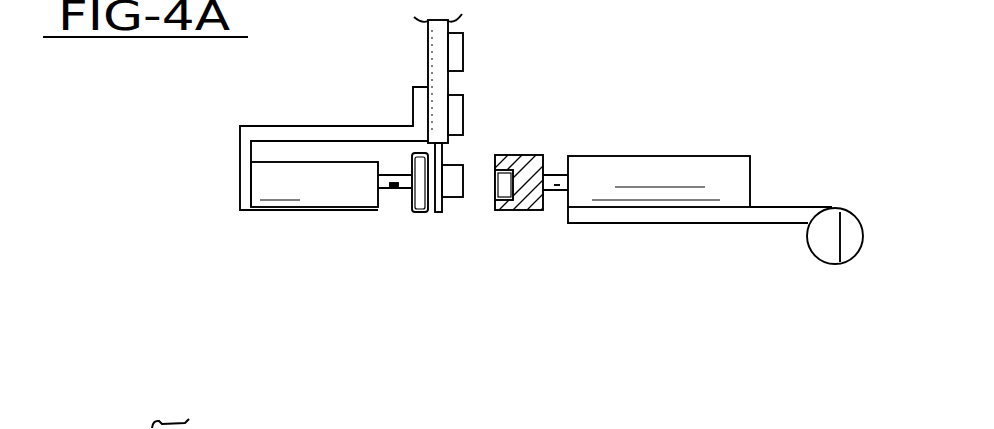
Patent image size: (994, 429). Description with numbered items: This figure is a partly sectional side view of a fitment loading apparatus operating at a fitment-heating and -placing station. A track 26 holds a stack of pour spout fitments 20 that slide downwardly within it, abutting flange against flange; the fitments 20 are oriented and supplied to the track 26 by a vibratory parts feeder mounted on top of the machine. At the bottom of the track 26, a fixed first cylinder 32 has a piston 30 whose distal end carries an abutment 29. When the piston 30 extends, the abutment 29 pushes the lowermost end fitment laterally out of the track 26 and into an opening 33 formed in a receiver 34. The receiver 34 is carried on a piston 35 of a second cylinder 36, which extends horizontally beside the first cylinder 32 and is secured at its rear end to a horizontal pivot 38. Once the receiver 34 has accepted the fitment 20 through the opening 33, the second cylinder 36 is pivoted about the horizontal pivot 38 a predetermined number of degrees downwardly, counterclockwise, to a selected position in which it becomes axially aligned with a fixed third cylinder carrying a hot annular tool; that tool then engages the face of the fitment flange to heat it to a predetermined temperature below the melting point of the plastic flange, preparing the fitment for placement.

The pour spout fitment 20 is at (463, 110).
The track 26 is at (427, 50).
The abutment 29 is at (422, 212).
The piston 30 is at (399, 190).
The first cylinder 32 is at (293, 193).
The opening 33 is at (497, 190).
The receiver 34 is at (552, 180).
The piston 35 is at (556, 198).
The second cylinder 36 is at (683, 163).
The horizontal pivot 38 is at (825, 250).